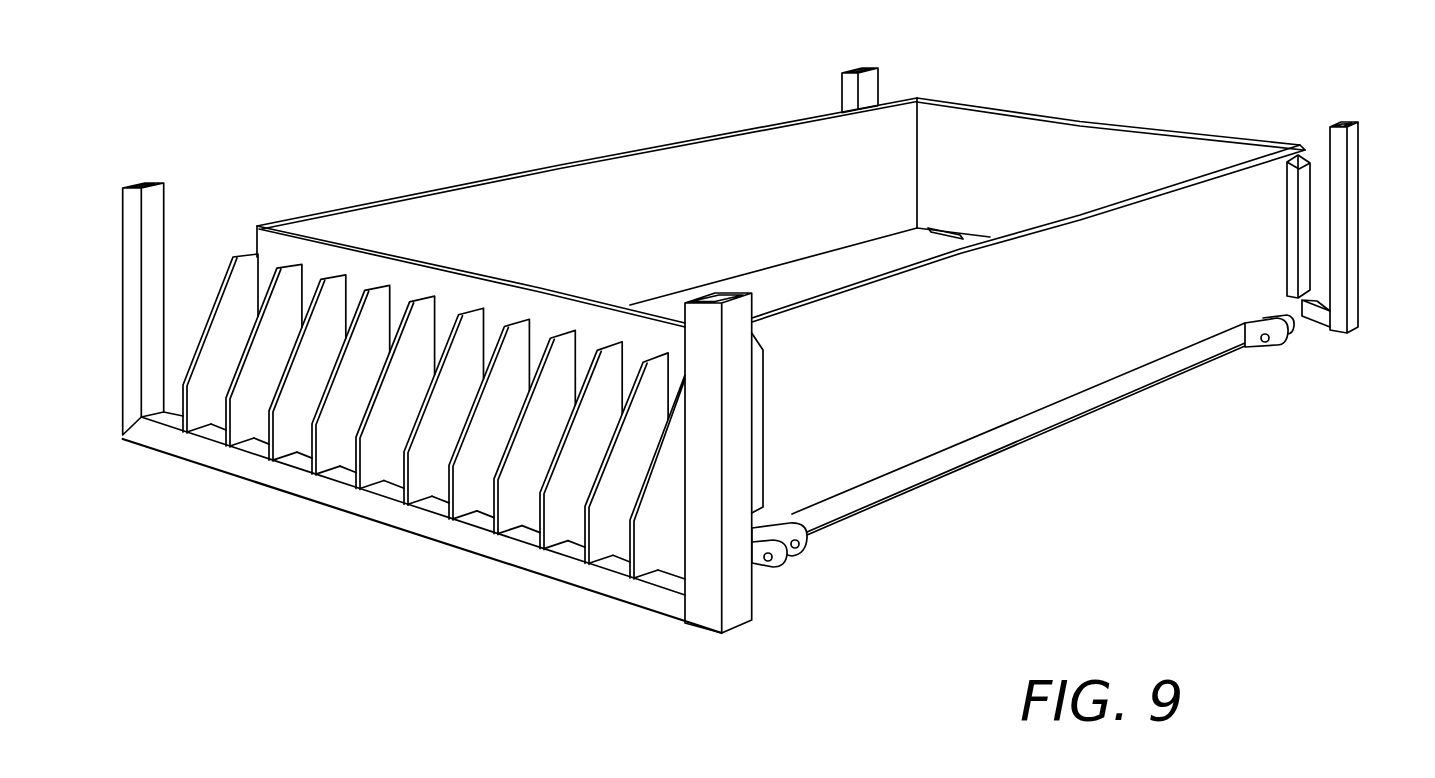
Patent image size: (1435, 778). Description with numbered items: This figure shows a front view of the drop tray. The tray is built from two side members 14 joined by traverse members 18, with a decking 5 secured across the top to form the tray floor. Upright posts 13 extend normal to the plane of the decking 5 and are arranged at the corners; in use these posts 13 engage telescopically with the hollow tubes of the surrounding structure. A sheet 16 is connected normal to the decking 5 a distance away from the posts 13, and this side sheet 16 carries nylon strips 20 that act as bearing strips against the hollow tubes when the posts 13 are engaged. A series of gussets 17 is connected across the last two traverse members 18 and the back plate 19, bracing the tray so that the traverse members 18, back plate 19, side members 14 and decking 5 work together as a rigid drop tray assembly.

The decking 5 is at (818, 272).
The upright posts 13 is at (867, 82).
The side members 14 is at (857, 500).
The sheet 16 is at (514, 207).
The gussets 17 is at (603, 523).
The traverse members 18 is at (620, 603).
The back plate 19 is at (337, 262).
The nylon strips 20 is at (1300, 190).